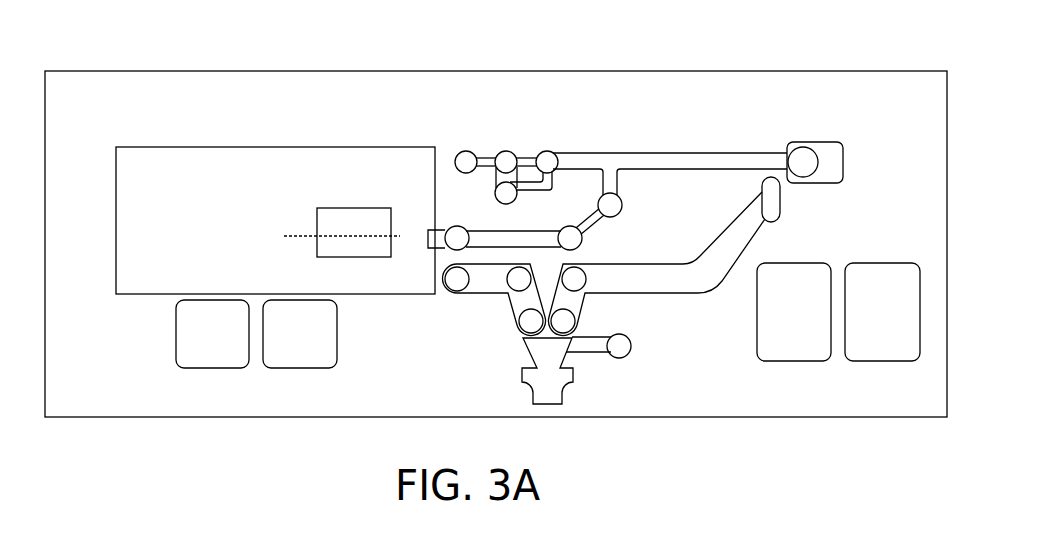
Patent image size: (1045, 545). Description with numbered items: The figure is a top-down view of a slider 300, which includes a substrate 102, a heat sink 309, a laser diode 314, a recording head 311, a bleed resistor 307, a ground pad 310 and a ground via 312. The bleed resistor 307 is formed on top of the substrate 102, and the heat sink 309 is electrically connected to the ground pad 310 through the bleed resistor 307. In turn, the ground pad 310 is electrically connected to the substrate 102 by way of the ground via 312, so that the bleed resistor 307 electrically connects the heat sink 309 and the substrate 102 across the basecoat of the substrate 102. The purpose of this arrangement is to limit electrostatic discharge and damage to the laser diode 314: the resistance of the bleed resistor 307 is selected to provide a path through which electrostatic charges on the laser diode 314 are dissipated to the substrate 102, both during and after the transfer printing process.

The slider 300 is at (60, 55).
The substrate 102 is at (102, 408).
The heat sink 309 is at (183, 173).
The laser diode 314 is at (349, 222).
The bleed resistor 307 is at (592, 227).
The ground pad 310 is at (825, 160).
The ground via 312 is at (802, 160).
The recording head 311 is at (562, 400).